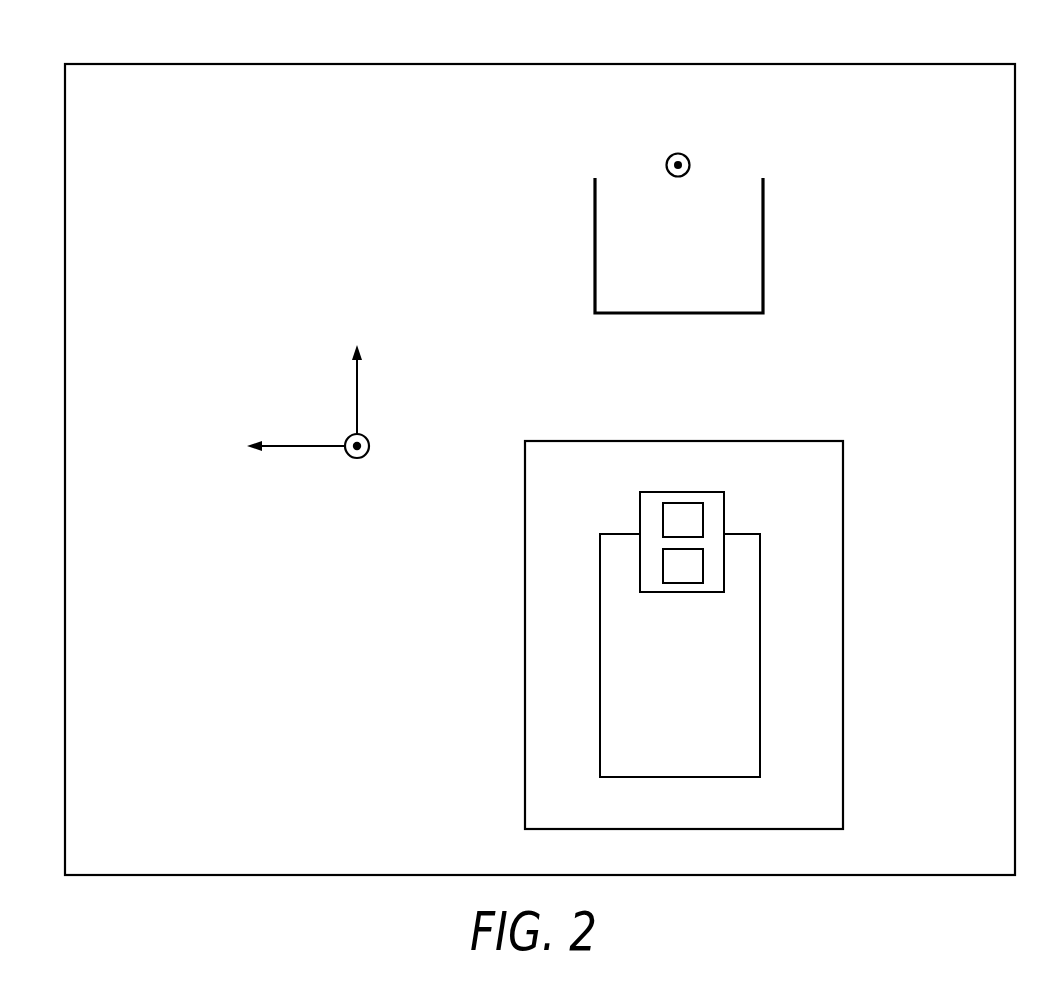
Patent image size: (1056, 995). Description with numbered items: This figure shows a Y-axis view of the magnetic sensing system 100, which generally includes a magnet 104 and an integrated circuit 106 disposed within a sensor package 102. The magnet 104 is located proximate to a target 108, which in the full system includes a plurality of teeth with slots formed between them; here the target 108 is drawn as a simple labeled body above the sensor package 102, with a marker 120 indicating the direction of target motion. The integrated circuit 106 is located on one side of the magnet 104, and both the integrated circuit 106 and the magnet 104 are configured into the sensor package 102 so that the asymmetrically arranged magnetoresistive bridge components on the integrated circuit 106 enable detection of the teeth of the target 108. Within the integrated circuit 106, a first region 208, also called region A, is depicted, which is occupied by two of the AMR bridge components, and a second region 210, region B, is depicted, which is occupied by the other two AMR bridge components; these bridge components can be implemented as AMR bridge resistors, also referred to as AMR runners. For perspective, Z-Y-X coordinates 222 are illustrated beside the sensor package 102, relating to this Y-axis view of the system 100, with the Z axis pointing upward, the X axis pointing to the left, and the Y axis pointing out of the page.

The magnetic sensing system 100 is at (970, 808).
The sensor package 102 is at (821, 807).
The magnet 104 is at (671, 718).
The integrated circuit (IC) 106 is at (684, 492).
The target 108 is at (750, 263).
The target motion direction 120 is at (690, 164).
The first region 208 is at (663, 518).
The second region 210 is at (663, 564).
The Z-Y-X coordinates 222 is at (385, 399).